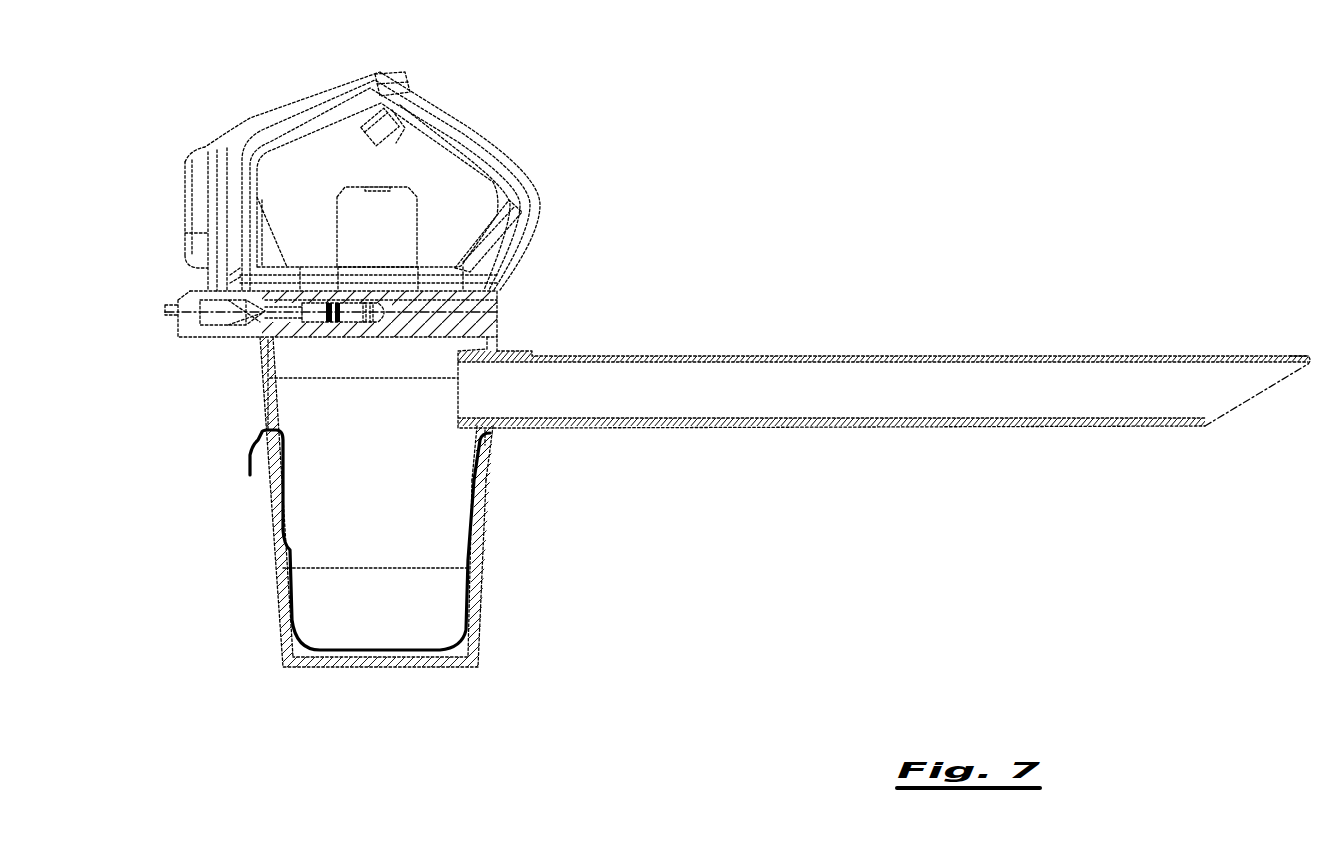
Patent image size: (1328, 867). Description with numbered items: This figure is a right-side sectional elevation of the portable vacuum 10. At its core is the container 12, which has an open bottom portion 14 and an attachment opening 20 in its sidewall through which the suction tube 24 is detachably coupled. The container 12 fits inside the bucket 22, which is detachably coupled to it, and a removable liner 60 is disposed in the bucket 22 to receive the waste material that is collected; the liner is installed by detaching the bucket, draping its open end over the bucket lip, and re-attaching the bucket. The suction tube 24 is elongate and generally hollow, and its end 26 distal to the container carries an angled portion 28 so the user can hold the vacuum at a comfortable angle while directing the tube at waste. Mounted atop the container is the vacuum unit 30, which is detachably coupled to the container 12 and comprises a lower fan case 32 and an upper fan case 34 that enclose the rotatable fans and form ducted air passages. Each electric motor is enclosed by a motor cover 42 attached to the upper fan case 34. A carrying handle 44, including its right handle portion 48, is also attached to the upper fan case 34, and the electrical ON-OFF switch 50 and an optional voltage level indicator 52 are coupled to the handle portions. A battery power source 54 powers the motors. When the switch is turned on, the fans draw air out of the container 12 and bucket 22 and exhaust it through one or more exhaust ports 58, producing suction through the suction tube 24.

The portable vacuum 10 is at (611, 117).
The container 12 is at (260, 428).
The open bottom portion 14 is at (370, 569).
The attachment opening 20 is at (512, 432).
The bucket 22 is at (478, 622).
The suction tube 24 is at (822, 357).
The end of suction tube 26 is at (1284, 357).
The angled portion 28 is at (1252, 396).
The vacuum unit 30 is at (170, 356).
The lower fan case 32 is at (497, 327).
The upper fan case 34 is at (497, 297).
The motor cover 42 is at (417, 240).
The carrying handle 44 is at (310, 84).
The right handle portion 48 is at (496, 135).
The electrical ON-OFF switch 50 is at (365, 142).
The voltage level indicator 52 is at (392, 70).
The battery power source 54 is at (185, 190).
The exhaust port 58 is at (218, 338).
The removable liner 60 is at (290, 506).